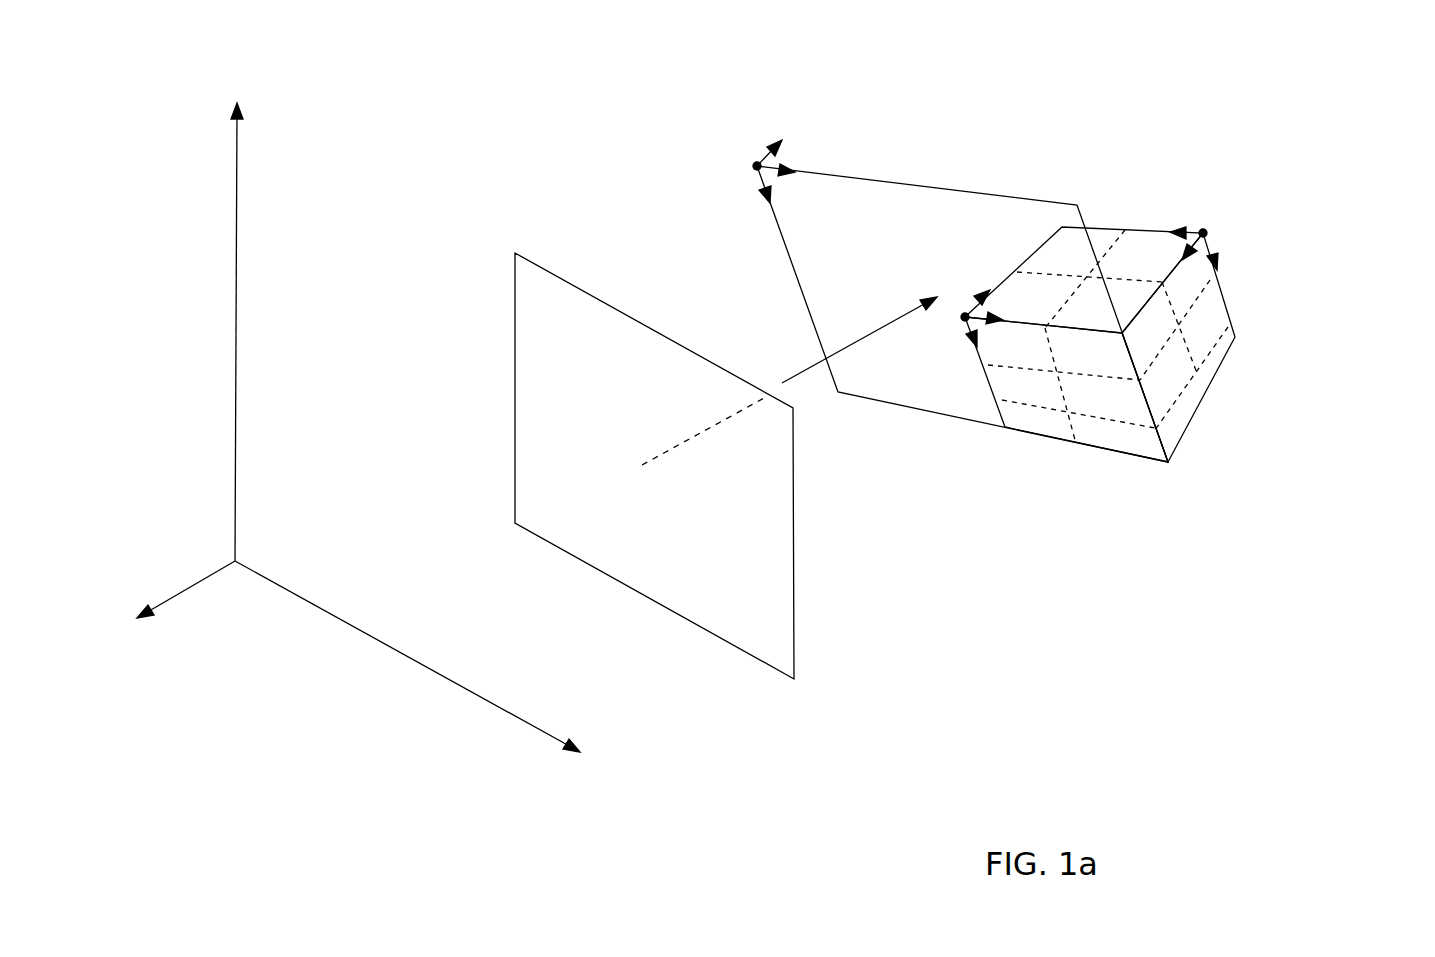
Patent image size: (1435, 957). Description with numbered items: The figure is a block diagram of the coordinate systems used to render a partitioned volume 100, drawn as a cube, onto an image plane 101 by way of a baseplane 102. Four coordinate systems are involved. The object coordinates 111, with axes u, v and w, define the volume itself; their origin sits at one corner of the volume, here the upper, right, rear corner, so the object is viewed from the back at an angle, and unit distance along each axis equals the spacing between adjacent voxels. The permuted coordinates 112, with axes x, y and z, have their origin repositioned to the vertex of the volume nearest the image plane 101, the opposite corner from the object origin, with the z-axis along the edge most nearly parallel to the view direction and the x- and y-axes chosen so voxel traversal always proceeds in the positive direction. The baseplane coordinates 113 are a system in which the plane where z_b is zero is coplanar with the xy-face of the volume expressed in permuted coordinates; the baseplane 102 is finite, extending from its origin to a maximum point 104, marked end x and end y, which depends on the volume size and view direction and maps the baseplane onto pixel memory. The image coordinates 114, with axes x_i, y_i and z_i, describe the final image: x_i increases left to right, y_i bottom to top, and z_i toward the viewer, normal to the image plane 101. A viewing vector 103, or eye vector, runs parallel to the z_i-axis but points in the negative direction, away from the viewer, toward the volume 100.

The partitioned volume 100 is at (1215, 426).
The image plane 101 is at (497, 462).
The baseplane 102 is at (980, 178).
The viewing vector 103 is at (812, 392).
The maximum point 104 is at (1325, 530).
The object coordinates 111 is at (1204, 230).
The permuted coordinates 112 is at (962, 312).
The baseplane coordinates 113 is at (752, 162).
The image coordinates 114 is at (243, 556).